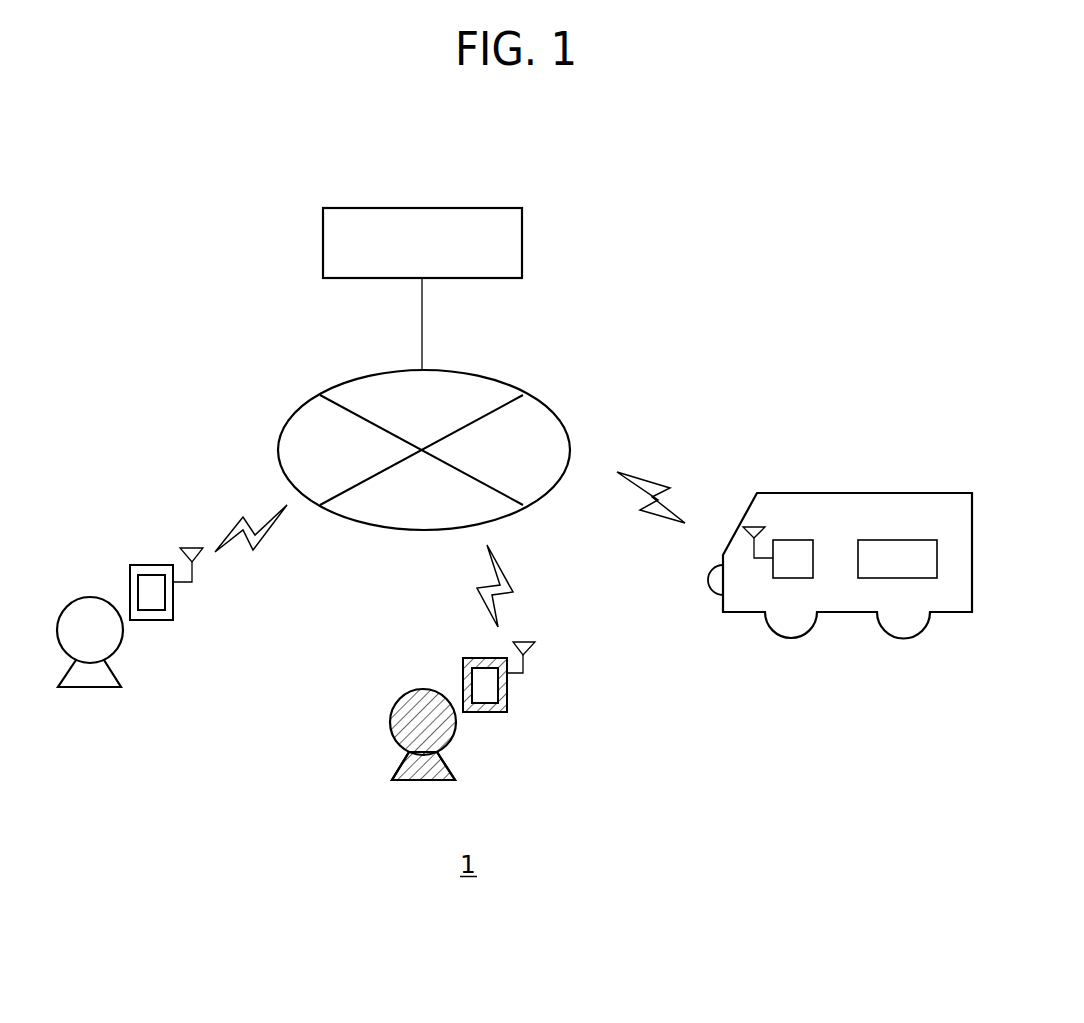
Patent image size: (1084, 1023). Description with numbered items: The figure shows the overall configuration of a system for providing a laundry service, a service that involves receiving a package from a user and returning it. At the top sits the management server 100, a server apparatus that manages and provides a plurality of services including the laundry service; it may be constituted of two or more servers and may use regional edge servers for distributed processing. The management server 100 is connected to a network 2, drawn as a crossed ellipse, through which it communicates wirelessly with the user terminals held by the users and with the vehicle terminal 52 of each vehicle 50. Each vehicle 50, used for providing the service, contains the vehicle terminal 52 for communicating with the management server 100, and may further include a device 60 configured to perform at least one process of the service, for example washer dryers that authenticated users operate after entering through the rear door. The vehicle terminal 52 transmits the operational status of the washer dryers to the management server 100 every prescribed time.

The network 2 is at (492, 378).
The vehicle 50 is at (897, 493).
The vehicle terminal 52 is at (793, 540).
The device 60 is at (876, 578).
The management server 100 is at (485, 208).